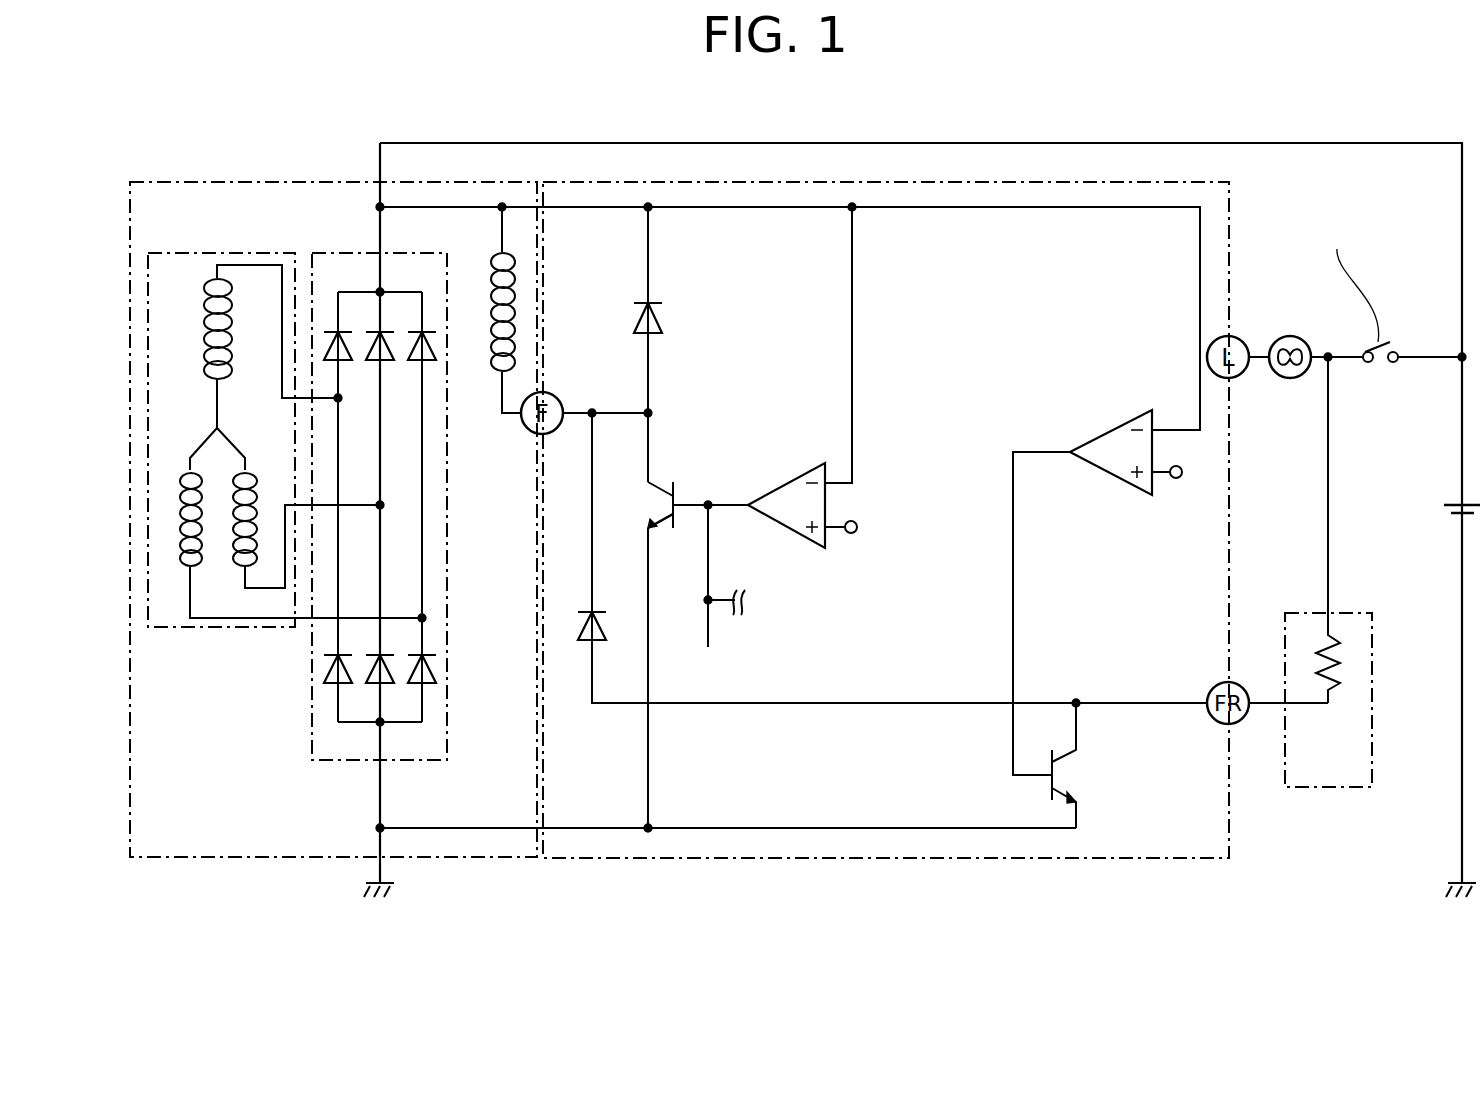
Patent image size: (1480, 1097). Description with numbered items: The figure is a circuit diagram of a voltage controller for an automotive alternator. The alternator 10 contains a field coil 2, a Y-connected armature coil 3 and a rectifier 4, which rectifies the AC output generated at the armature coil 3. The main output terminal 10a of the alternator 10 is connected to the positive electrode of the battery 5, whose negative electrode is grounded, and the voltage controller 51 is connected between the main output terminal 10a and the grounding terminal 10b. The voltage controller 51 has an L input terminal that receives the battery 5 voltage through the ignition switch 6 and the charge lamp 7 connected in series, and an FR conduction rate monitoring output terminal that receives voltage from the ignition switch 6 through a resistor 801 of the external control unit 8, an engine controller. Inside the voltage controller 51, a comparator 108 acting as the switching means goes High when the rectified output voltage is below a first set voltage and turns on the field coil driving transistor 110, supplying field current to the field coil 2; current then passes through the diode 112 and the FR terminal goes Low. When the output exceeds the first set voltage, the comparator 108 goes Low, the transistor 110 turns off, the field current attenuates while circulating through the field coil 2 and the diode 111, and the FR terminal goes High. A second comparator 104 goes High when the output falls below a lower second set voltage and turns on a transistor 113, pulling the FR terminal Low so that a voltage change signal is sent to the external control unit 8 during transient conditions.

The automotive alternator 10 is at (219, 182).
The main output terminal 10a is at (378, 205).
The grounding terminal 10b is at (378, 828).
The field coil 2 is at (490, 250).
The Y-connected armature coil 3 is at (193, 253).
The rectifier 4 is at (333, 253).
The battery 5 is at (1458, 500).
The ignition switch 6 is at (1380, 364).
The charge lamp 7 is at (1290, 379).
The external control unit 8 is at (1339, 615).
The resistor 801 is at (1338, 636).
The voltage controller 51 is at (760, 182).
The comparator 104 is at (1115, 430).
The comparator 108 is at (780, 482).
The field coil driving transistor 110 is at (658, 498).
The diode 111 is at (663, 322).
The diode 112 is at (592, 645).
The transistor 113 is at (1045, 778).